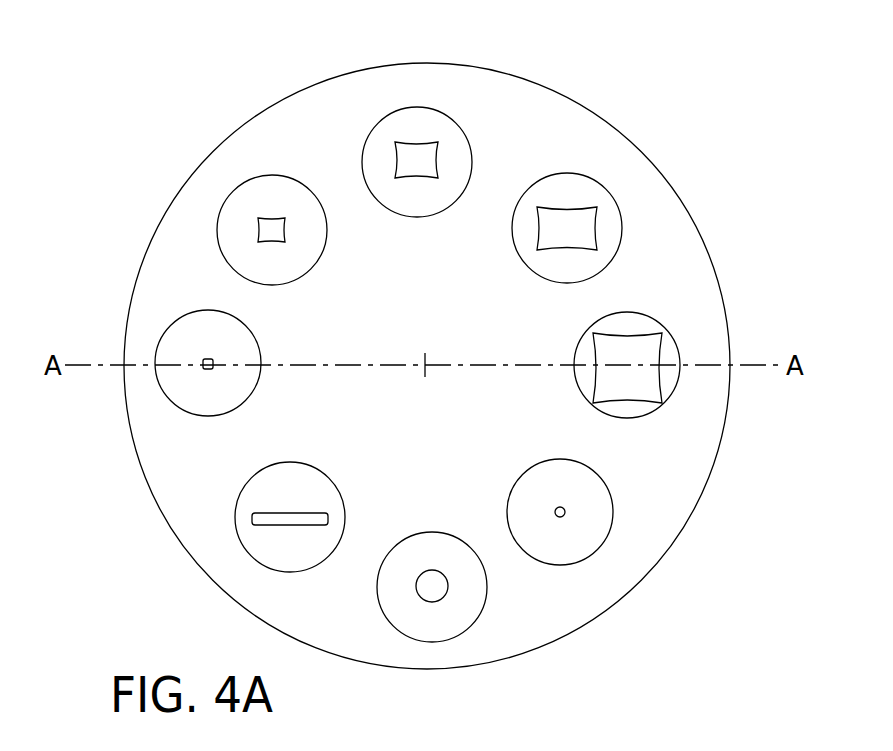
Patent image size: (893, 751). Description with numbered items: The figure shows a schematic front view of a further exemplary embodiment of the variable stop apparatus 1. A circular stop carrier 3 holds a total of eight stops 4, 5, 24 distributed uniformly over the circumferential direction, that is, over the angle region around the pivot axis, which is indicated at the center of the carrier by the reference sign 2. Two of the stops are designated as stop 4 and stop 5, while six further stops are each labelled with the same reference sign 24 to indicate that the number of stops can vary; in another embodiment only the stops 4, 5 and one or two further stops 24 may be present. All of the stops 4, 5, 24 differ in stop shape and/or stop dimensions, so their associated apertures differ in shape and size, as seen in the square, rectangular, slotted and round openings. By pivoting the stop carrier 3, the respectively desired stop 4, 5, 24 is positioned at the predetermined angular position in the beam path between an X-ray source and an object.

The variable stop apparatus 1 is at (150, 87).
The central axis 2 is at (430, 360).
The stop carrier 3 is at (523, 115).
The stop 4 is at (177, 385).
The stop 5 is at (670, 337).
The stops 24 is at (232, 232).